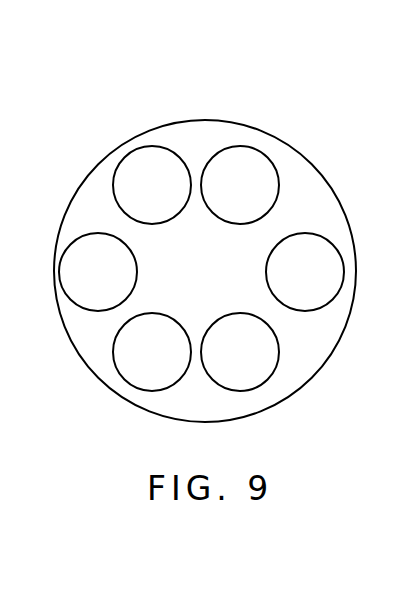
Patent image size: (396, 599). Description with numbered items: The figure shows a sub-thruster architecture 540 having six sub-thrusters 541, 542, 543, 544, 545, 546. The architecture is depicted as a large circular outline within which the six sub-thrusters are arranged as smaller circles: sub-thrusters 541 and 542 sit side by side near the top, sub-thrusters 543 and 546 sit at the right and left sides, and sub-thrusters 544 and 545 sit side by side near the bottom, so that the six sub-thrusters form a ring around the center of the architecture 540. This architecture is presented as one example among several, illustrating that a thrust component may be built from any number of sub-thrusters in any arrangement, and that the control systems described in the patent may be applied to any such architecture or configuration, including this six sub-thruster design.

The sub-thruster architecture 540 is at (238, 121).
The sub-thruster 541 is at (152, 185).
The sub-thruster 542 is at (240, 185).
The sub-thruster 543 is at (305, 272).
The sub-thruster 544 is at (240, 352).
The sub-thruster 545 is at (152, 352).
The sub-thruster 546 is at (98, 272).